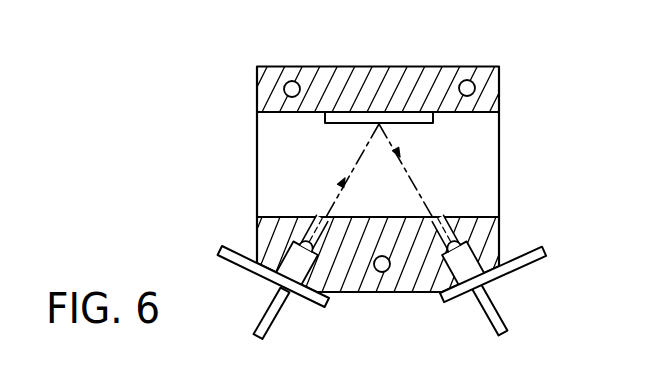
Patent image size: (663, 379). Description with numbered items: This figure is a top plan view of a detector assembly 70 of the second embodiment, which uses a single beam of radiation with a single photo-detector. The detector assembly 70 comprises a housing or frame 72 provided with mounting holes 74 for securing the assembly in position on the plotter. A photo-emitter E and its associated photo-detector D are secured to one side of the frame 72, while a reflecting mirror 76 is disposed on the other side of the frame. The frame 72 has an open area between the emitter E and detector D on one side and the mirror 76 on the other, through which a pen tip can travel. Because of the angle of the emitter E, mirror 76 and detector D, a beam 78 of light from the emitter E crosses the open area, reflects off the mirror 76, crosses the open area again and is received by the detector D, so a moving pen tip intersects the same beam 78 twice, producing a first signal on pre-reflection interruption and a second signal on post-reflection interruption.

The detector assembly 70 is at (243, 92).
The housing or frame 72 is at (461, 68).
The mounting holes 74 is at (387, 271).
The reflecting mirror 76 is at (338, 118).
The beam 78 is at (325, 202).
The photo-emitter E is at (310, 263).
The photo-detector D is at (467, 257).